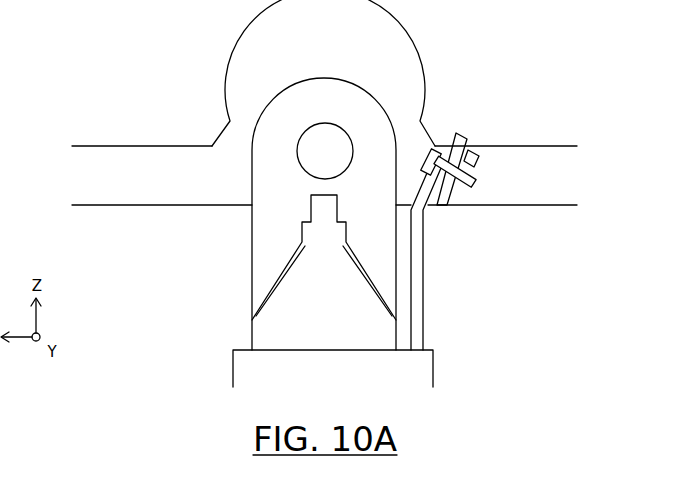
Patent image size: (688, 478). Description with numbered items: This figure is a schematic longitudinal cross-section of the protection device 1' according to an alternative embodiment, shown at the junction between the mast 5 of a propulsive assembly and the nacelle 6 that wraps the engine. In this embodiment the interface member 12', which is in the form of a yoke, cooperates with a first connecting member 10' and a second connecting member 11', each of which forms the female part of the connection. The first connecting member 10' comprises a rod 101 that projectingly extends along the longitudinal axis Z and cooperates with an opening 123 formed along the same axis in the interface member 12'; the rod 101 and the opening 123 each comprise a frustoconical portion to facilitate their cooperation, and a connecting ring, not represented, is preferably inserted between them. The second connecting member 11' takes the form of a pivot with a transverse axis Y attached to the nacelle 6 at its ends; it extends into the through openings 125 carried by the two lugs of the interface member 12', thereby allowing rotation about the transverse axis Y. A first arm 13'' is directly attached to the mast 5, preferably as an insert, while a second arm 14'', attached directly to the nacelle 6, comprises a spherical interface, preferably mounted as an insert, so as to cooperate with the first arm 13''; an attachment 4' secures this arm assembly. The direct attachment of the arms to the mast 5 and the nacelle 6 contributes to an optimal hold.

The nozzle assembly 1' is at (337, 73).
The nacelle 6 is at (99, 183).
The through opening 125 is at (267, 143).
The second connecting member 11' is at (325, 151).
The interface member 12' is at (285, 214).
The opening 123 is at (276, 281).
The rod 101 is at (345, 316).
The first connecting member 10' is at (274, 215).
The mast 5 is at (336, 383).
The first arm 13'' is at (449, 259).
The second arm 14'' is at (508, 159).
The clamp plate 4' is at (493, 198).